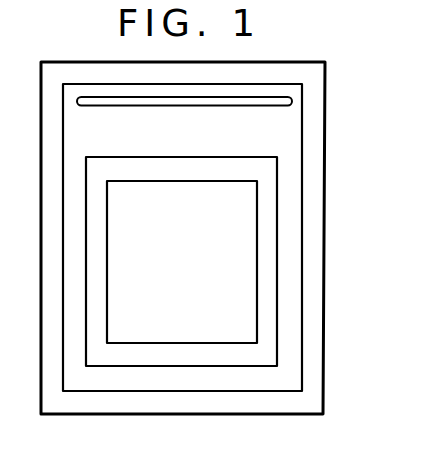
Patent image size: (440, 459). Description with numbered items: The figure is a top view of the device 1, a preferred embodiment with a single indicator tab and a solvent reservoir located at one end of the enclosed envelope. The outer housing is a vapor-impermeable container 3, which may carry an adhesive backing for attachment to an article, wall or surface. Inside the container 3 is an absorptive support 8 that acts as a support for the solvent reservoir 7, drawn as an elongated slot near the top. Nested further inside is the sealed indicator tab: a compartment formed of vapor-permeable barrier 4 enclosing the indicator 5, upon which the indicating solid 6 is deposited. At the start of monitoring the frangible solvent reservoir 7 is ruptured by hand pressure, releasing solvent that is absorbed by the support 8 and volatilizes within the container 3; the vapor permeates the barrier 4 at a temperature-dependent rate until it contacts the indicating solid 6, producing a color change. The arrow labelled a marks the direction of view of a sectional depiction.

The device 1 is at (335, 380).
The vapor-impermeable container 3 is at (324, 343).
The vapor-permeable barrier 4 is at (277, 310).
The indicator 5 is at (257, 287).
The indicating solid 6 is at (205, 192).
The solvent reservoir 7 is at (258, 106).
The absorptive support 8 is at (303, 104).
The direction of view a is at (328, 183).